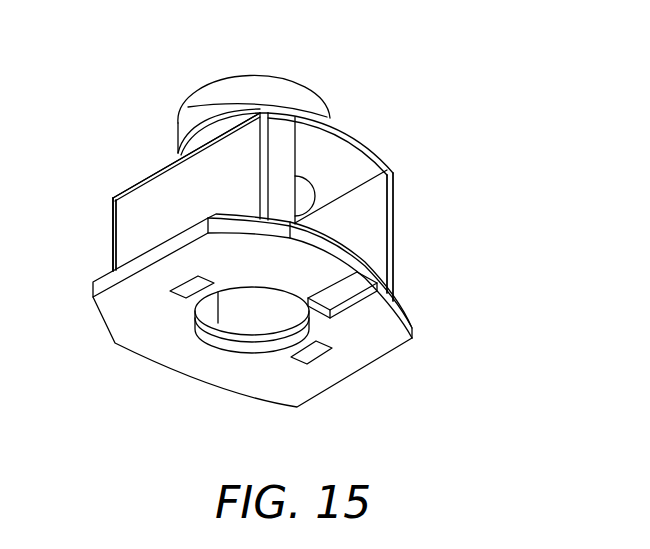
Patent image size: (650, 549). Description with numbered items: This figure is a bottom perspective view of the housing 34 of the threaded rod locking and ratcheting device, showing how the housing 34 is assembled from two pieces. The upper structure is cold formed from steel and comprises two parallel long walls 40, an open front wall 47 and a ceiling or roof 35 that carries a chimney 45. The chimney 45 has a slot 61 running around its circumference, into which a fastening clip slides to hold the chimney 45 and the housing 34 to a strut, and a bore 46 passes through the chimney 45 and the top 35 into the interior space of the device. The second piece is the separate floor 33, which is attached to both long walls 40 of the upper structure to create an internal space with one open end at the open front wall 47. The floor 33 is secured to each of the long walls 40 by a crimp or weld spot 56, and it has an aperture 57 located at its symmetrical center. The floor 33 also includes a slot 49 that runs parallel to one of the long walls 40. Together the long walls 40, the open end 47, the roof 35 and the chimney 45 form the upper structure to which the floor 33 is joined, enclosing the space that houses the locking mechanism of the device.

The floor 33 is at (382, 342).
The housing 34 is at (113, 248).
The ceiling 35 is at (125, 193).
The long walls 40 is at (128, 225).
The chimney 45 is at (310, 91).
The bore 46 is at (253, 78).
The open front wall 47 is at (350, 147).
The slot 49 is at (358, 290).
The crimp or weld spot 56 is at (181, 299).
The aperture 57 is at (230, 352).
The slot 61 is at (203, 125).